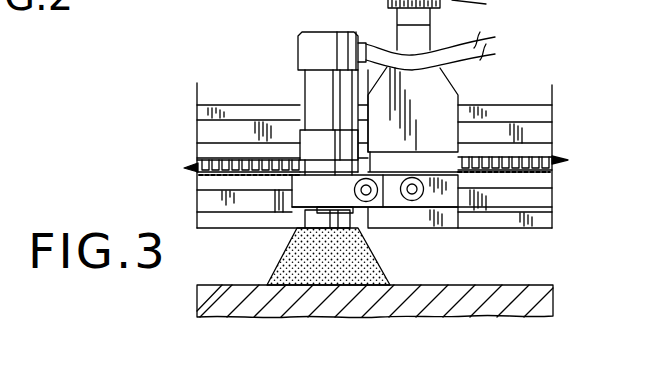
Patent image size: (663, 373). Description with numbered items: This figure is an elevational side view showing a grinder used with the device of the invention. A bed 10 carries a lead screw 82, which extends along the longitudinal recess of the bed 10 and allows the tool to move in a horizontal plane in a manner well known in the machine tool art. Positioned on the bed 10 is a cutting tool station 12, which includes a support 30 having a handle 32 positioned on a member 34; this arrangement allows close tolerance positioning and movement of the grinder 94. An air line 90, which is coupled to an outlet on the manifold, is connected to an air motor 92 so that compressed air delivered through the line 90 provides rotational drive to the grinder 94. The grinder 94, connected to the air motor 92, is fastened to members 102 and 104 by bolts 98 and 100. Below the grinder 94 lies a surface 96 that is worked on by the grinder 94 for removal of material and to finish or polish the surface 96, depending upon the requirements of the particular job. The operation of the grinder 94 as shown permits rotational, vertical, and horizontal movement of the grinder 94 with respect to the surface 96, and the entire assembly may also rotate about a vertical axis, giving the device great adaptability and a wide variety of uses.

The bed 10 is at (217, 100).
The lead screw 82 is at (277, 157).
The cutting tool station 12 is at (465, 91).
The air motor 92 is at (322, 57).
The handle 32 is at (376, 25).
The member 34 is at (485, 5).
The air line 90 is at (470, 52).
The support 30 is at (437, 132).
The member 102 is at (298, 184).
The bolt 100 is at (369, 193).
The bolt 98 is at (414, 192).
The member 104 is at (441, 199).
The grinder 94 is at (294, 248).
The surface 96 is at (204, 286).